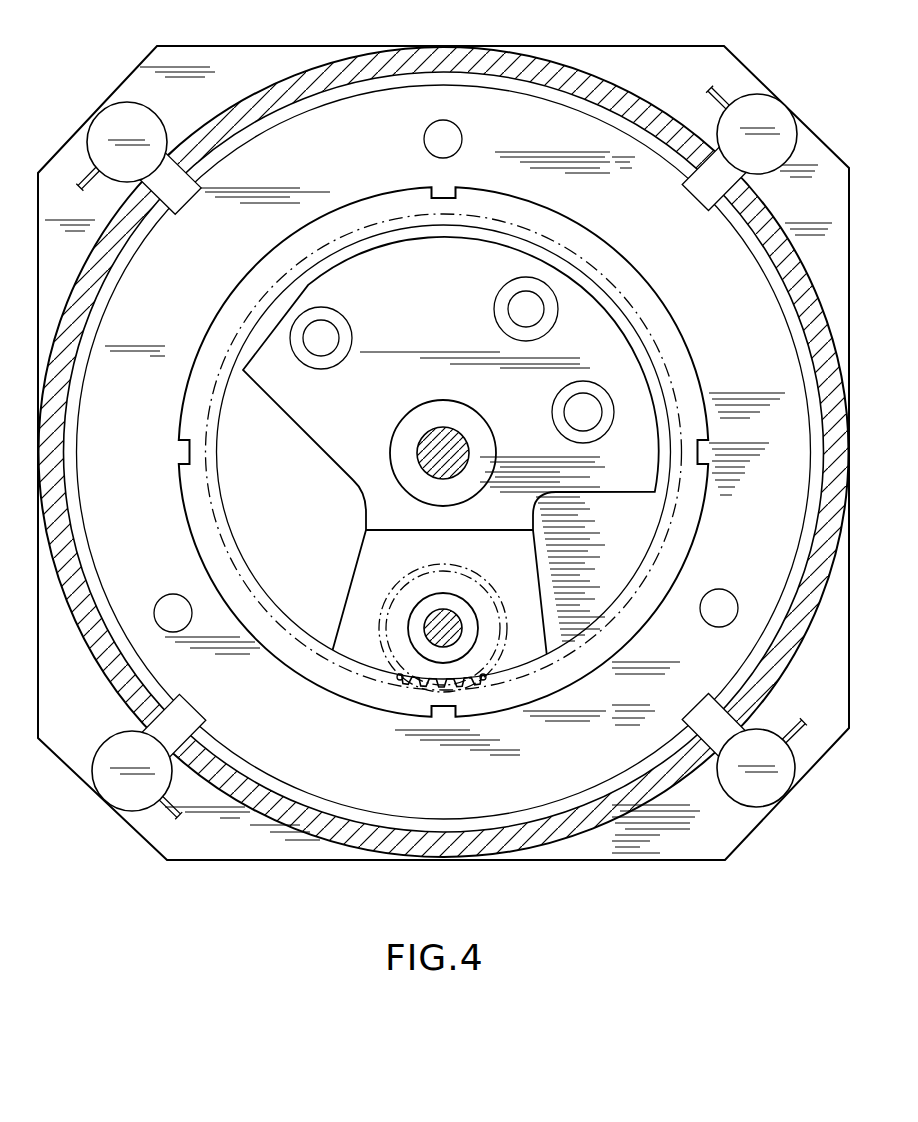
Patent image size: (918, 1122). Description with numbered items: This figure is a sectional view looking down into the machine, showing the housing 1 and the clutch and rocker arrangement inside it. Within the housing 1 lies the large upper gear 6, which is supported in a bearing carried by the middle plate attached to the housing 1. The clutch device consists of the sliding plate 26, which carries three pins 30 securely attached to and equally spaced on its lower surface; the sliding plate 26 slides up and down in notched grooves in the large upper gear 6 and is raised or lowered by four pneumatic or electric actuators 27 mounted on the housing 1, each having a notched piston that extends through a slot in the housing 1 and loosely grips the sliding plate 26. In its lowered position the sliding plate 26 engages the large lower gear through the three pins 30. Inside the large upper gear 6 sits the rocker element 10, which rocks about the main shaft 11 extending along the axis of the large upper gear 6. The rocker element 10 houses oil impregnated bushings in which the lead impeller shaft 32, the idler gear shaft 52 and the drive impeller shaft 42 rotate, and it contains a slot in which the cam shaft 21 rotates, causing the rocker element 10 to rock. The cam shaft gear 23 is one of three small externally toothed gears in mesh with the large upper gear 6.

The housing 1 is at (283, 88).
The sliding plate 26 is at (353, 95).
The actuators 27 is at (117, 103).
The pins 30 is at (462, 133).
The large upper gear 6 is at (560, 210).
The rocker element 10 is at (346, 590).
The main shaft 11 is at (418, 448).
The lead impeller shaft 32 is at (348, 339).
The idler gear shaft 52 is at (506, 297).
The drive impeller shaft 42 is at (602, 404).
The cam shaft 21 is at (456, 640).
The cam shaft gear 23 is at (399, 679).